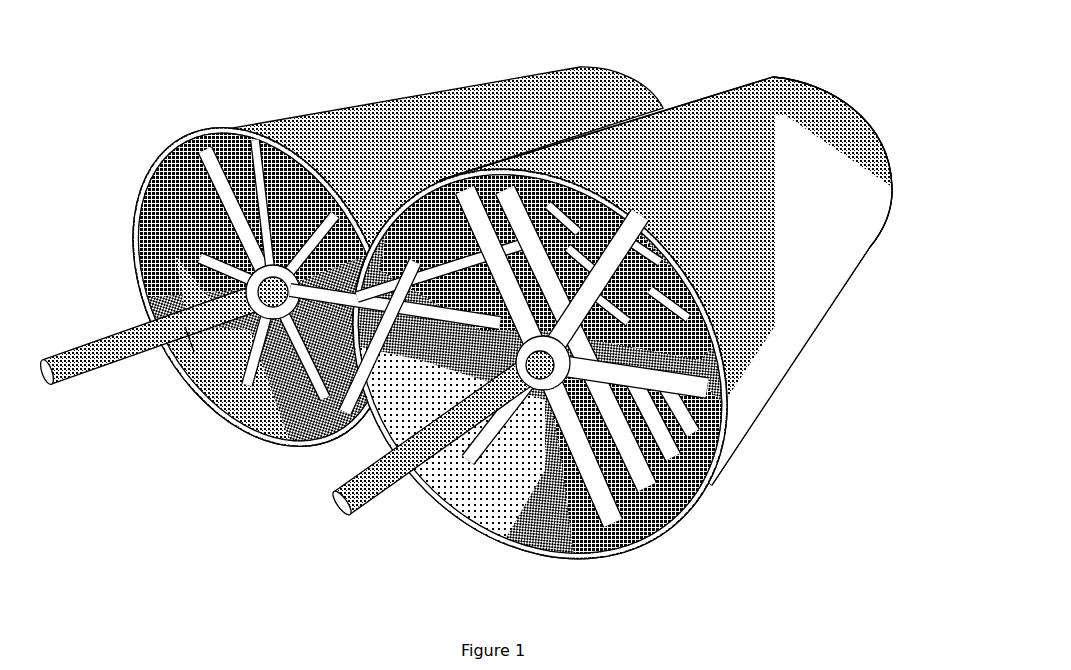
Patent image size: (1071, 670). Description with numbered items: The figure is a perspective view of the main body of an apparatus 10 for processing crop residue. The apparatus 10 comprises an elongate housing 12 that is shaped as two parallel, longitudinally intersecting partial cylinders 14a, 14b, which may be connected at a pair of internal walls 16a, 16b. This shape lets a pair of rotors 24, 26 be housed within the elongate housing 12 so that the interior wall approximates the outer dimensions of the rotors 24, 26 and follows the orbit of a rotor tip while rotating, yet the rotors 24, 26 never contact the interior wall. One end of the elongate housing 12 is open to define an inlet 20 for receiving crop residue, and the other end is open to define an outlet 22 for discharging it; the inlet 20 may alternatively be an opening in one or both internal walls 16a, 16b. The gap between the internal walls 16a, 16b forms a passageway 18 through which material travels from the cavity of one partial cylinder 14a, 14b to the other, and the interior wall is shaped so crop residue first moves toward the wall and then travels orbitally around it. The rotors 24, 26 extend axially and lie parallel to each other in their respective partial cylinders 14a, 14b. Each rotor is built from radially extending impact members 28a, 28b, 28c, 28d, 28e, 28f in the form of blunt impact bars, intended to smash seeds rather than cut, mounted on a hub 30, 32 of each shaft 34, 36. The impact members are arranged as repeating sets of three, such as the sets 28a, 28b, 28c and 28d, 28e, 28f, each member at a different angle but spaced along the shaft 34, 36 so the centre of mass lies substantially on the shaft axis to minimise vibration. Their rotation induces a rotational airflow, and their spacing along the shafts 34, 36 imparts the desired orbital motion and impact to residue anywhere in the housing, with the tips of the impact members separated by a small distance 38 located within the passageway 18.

The apparatus 10 is at (350, 259).
The elongate housing 12 is at (608, 317).
The partial cylinder 14a is at (807, 300).
The partial cylinder 14b is at (340, 130).
The internal wall 16a is at (380, 326).
The internal wall 16b is at (242, 301).
The passageway 18 is at (232, 152).
The inlet 20 is at (435, 531).
The outlet 22 is at (847, 69).
The rotor 24 is at (540, 364).
The rotor 26 is at (187, 276).
The impact member 28a is at (603, 505).
The impact member 28b is at (697, 380).
The impact member 28c is at (623, 243).
The impact member 28d is at (180, 138).
The impact member 28e is at (243, 382).
The impact member 28f is at (140, 190).
The hub 30 is at (512, 380).
The hub 32 is at (150, 374).
The shaft 34 is at (380, 473).
The shaft 36 is at (120, 347).
The small distance 38 is at (342, 415).